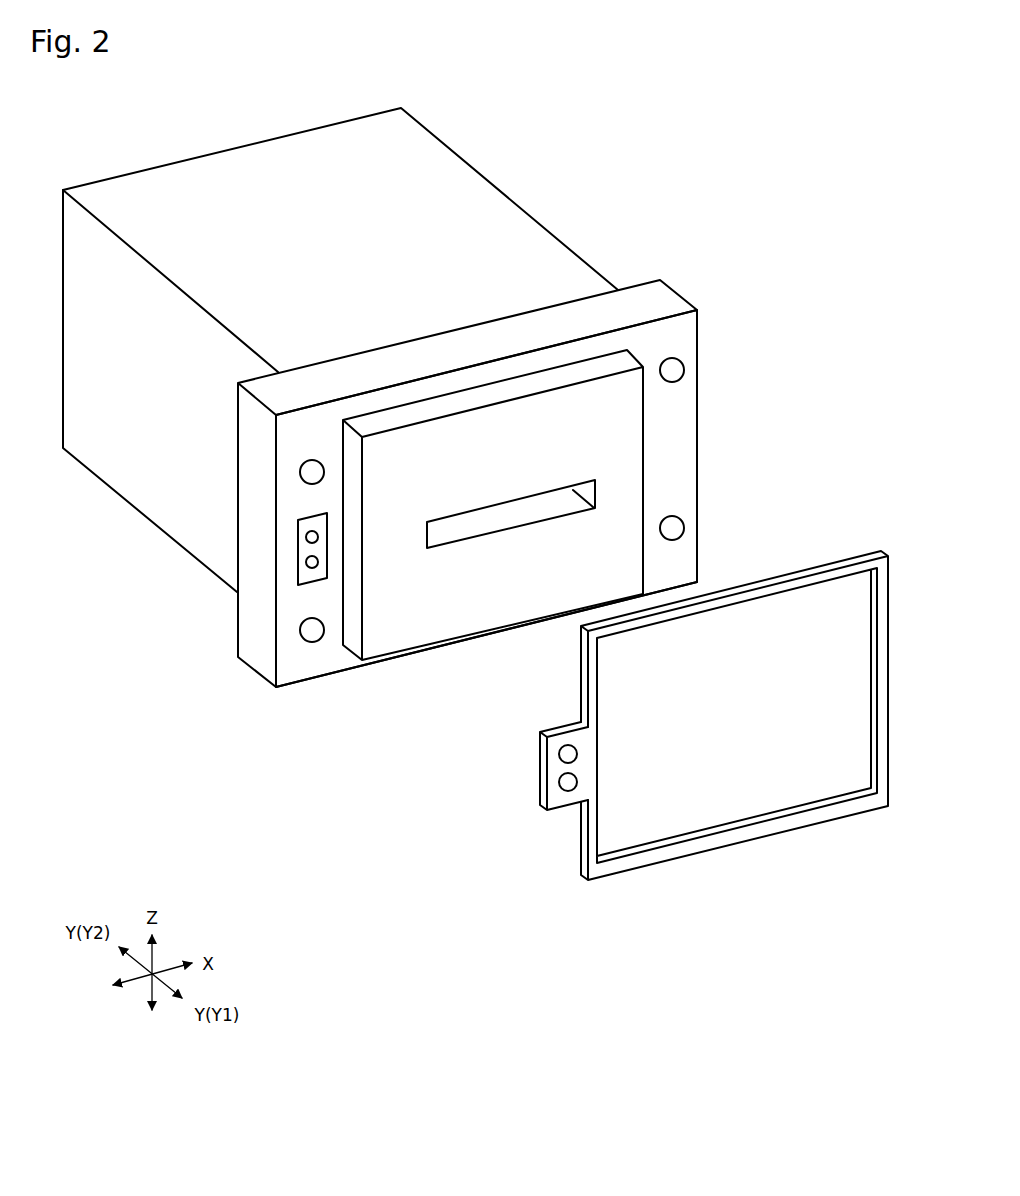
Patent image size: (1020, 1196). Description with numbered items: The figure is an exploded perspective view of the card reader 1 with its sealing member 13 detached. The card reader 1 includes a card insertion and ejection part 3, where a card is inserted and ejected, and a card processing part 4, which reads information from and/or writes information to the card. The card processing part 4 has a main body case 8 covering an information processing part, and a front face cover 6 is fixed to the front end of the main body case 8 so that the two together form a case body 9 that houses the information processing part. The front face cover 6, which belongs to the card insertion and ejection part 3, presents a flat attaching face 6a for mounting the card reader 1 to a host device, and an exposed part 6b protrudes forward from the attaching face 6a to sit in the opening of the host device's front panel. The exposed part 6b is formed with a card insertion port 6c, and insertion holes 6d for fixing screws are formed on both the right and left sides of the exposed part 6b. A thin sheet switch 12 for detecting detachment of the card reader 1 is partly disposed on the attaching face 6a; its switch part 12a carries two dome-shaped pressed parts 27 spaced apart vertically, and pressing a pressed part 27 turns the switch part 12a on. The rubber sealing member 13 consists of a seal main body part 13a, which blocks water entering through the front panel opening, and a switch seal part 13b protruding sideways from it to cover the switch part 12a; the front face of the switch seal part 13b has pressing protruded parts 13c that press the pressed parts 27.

The card reader 1 is at (590, 150).
The card insertion and ejection part 3 is at (421, 422).
The card processing part 4 is at (452, 150).
The front face cover 6 is at (680, 294).
The card reader side attaching face 6a is at (683, 440).
The exposed part 6b is at (473, 622).
The card insertion port 6c is at (517, 513).
The insertion holes 6d is at (684, 370).
The main body case 8 is at (402, 349).
The case body 9 is at (421, 422).
The sheet switch 12 is at (277, 542).
The switch part 12a is at (277, 542).
The sealing member 13 is at (668, 734).
The seal main body part 13a is at (735, 850).
The switch seal part 13b is at (563, 812).
The pressing protruded part 13c is at (558, 754).
The pressed part 27 is at (333, 556).